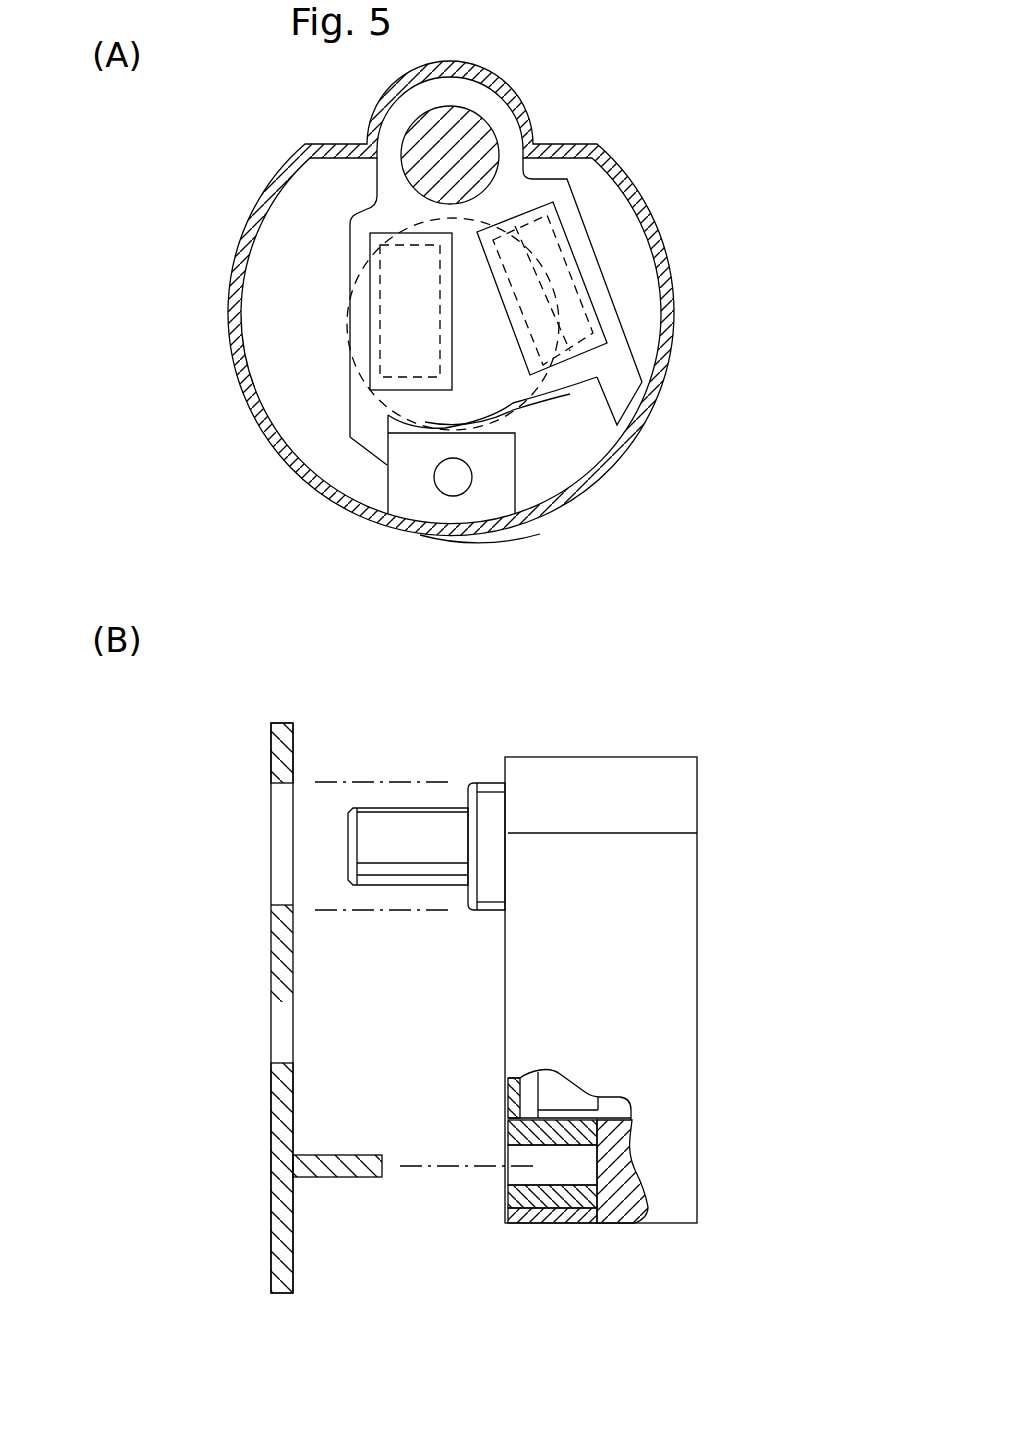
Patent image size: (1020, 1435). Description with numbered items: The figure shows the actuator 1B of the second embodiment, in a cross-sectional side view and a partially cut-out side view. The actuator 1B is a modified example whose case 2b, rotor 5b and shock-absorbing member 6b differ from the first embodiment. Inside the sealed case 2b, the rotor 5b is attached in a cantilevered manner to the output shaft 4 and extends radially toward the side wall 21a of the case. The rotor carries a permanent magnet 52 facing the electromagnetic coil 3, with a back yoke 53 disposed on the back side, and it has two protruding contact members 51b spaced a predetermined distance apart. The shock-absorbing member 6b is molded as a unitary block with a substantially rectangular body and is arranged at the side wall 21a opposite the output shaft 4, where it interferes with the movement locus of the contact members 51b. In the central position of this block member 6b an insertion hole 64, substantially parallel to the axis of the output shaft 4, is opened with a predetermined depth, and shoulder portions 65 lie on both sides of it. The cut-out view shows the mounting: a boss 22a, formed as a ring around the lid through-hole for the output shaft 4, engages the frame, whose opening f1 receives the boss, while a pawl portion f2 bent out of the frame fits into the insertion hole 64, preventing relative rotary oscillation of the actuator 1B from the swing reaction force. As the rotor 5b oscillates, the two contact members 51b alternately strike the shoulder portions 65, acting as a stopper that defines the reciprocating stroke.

The actuator 1B is at (580, 125).
The case 2b is at (282, 285).
The electromagnetic coil 3 is at (507, 418).
The output shaft 4 is at (433, 140).
The rotor 5b is at (598, 292).
The shock-absorbing member (block member) 6b is at (493, 473).
The side wall 21a is at (485, 535).
The boss 22a is at (493, 792).
The contact member 51b is at (620, 407).
The permanent magnet 52 is at (382, 276).
The back yoke 53 is at (375, 375).
The insertion hole 64 is at (440, 492).
The shoulder portion 65 is at (387, 487).
The opening f1 is at (285, 906).
The pawl portion f2 is at (332, 1156).